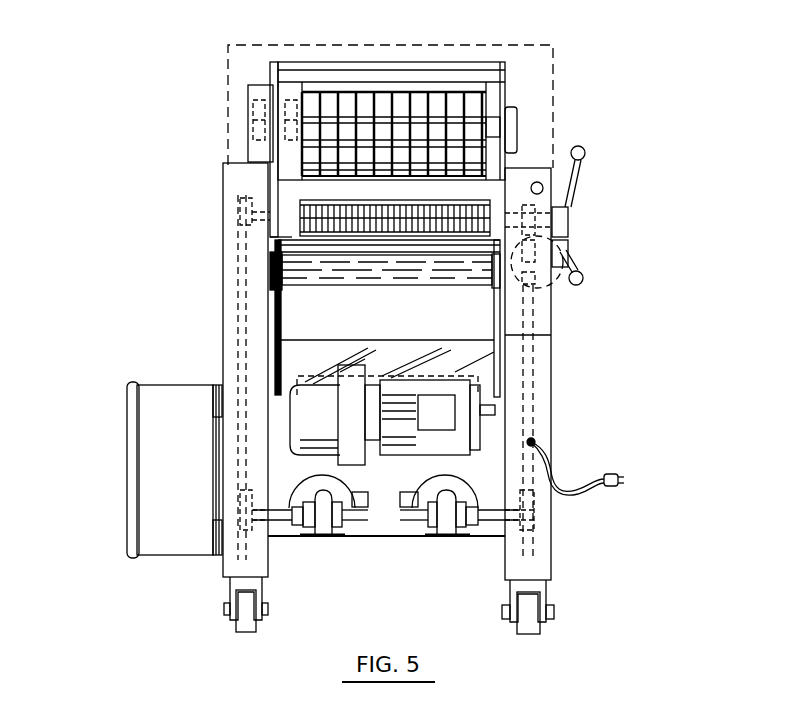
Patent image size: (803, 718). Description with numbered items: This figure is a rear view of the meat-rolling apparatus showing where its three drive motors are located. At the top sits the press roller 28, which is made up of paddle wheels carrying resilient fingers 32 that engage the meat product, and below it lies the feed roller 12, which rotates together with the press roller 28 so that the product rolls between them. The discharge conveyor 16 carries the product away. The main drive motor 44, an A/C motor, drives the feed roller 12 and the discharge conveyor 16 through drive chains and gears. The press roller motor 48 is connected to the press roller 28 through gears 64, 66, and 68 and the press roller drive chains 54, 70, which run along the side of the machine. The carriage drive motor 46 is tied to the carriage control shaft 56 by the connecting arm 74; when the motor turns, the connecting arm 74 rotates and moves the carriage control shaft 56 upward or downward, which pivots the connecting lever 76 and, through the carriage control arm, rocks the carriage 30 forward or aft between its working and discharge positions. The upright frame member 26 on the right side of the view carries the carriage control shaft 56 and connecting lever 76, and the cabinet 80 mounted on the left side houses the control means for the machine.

The feed roller 12 is at (463, 213).
The discharge conveyor 16 is at (551, 335).
The right frame member 26 is at (551, 410).
The press roller 28 is at (498, 98).
The carriage 30 is at (262, 66).
The resilient fingers 32 is at (350, 96).
The main drive motor 44 is at (388, 460).
The carriage drive motor 46 is at (446, 540).
The press roller motor 48 is at (325, 537).
The press roller drive chain 54 is at (233, 300).
The carriage control shaft 56 is at (508, 375).
The gear 64 is at (232, 558).
The gear 66 is at (243, 202).
The gear 68 is at (245, 103).
The press roller drive chain 70 is at (250, 163).
The connecting arm 74 is at (537, 503).
The connecting lever 76 is at (530, 296).
The cabinet 80 is at (127, 462).